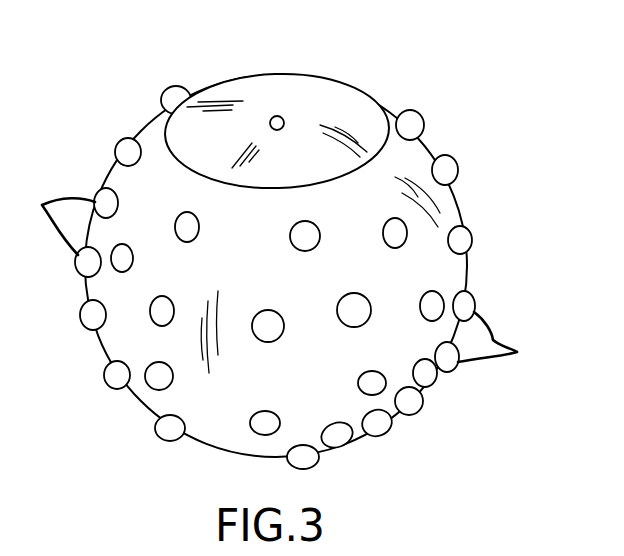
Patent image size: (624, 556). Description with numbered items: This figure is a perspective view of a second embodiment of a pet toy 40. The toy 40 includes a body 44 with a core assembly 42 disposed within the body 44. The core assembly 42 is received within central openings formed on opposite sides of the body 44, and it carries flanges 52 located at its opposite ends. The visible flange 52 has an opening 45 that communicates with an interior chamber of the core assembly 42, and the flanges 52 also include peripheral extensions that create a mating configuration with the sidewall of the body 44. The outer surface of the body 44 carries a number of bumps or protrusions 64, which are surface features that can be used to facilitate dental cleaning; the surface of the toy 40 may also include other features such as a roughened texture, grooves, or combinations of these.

The pet toy 40 is at (302, 243).
The core assembly 42 is at (251, 104).
The body 44 is at (472, 205).
The opening 45 is at (283, 120).
The flange 52 is at (270, 97).
The bumps or protrusions 64 is at (281, 280).